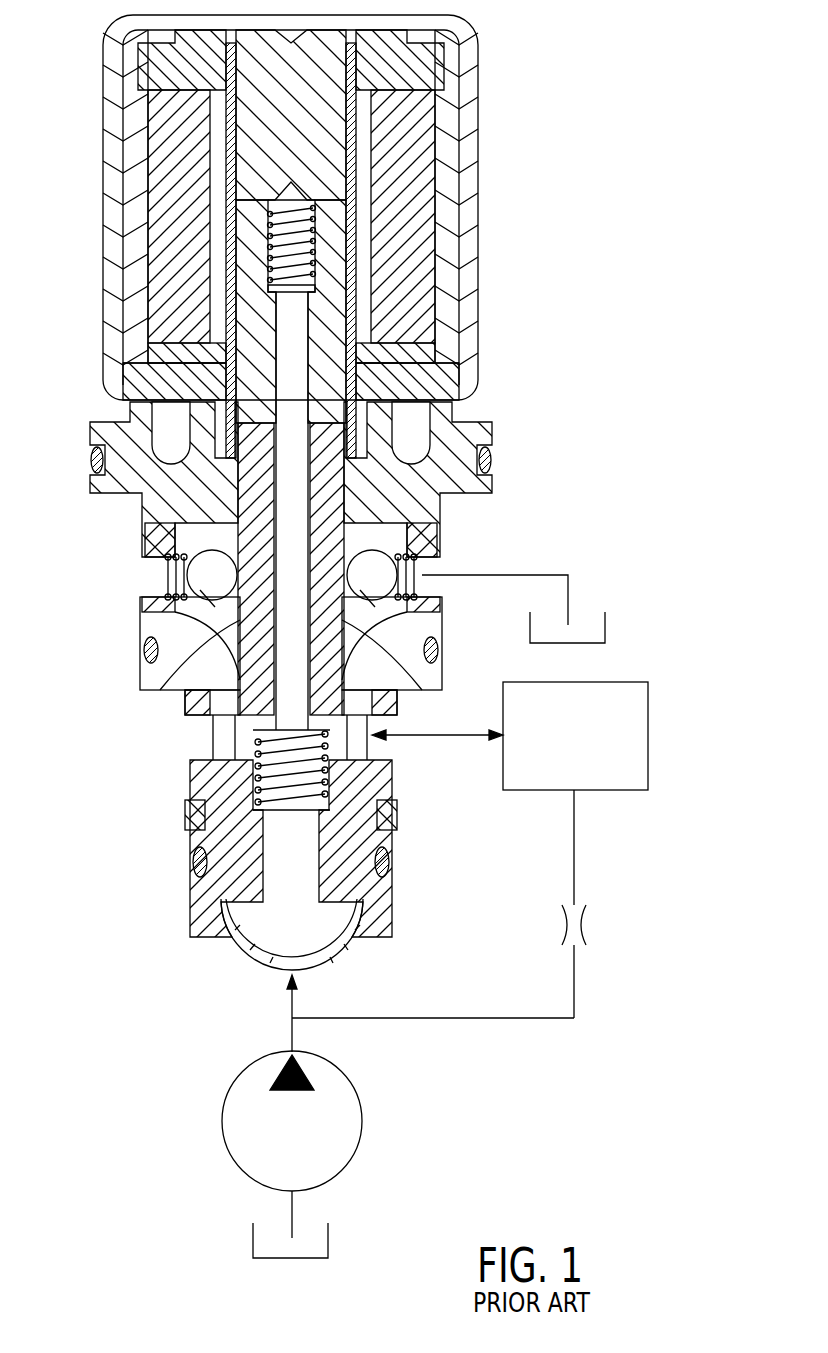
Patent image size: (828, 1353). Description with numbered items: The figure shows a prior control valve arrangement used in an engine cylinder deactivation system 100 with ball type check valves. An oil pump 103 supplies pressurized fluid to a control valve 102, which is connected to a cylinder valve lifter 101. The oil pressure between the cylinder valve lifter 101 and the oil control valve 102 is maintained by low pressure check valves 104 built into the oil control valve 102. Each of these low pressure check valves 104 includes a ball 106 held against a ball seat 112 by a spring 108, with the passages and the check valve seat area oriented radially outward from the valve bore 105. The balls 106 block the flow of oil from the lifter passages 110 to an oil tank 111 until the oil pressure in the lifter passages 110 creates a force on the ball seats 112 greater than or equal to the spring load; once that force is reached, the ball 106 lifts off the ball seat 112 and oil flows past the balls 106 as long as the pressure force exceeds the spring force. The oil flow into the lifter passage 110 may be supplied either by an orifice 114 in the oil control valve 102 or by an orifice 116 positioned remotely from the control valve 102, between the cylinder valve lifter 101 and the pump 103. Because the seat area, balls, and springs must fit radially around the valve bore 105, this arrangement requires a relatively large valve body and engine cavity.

The cylinder deactivation system 100 is at (538, 1052).
The cylinder valve lifter 101 is at (649, 735).
The control valve 102 is at (506, 186).
The oil pump 103 is at (360, 1118).
The low pressure check valves 104 is at (155, 568).
The valve bore 105 is at (336, 485).
The balls 106 is at (165, 626).
The springs 108 is at (163, 579).
The lifter passages 110 is at (213, 736).
The oil tank 111 is at (607, 624).
The ball seats 112 is at (235, 600).
The orifice 114 is at (226, 774).
The orifice 116 is at (582, 925).